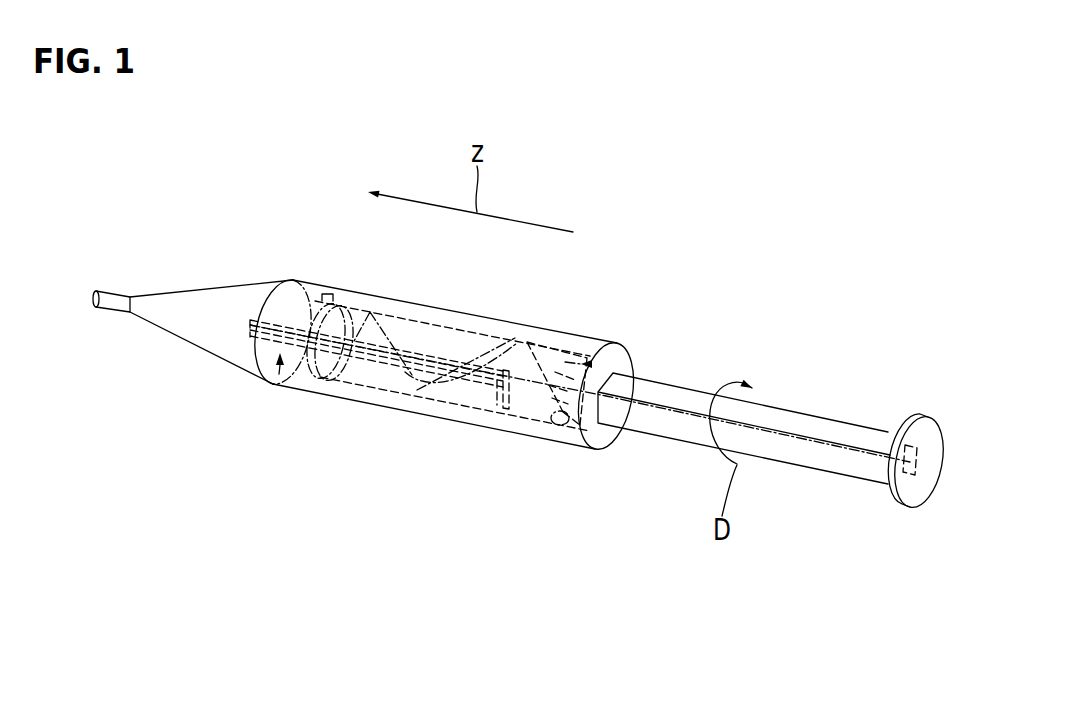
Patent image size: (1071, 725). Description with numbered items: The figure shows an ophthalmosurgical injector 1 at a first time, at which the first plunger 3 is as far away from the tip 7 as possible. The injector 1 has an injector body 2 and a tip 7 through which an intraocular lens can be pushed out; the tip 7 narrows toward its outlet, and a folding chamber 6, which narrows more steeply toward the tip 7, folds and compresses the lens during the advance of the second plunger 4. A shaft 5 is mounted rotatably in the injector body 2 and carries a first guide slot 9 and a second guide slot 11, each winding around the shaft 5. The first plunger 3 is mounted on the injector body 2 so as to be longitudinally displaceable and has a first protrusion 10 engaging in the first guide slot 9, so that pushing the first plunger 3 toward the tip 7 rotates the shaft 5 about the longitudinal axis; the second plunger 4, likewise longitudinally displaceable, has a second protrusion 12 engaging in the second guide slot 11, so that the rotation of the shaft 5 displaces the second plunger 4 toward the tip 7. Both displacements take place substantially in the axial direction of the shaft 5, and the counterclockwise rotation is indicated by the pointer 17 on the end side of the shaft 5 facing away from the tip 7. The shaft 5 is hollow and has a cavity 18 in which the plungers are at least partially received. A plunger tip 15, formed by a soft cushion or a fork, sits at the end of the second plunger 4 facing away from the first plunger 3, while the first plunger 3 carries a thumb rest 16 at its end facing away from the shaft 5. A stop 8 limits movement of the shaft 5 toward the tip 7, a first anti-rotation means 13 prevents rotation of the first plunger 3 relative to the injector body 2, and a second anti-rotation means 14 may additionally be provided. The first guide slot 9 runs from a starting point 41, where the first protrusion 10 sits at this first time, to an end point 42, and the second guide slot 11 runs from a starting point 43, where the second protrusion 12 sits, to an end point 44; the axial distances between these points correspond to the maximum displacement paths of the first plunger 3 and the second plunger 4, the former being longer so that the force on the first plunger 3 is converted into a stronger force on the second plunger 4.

The ophthalmosurgical injector 1 is at (196, 186).
The injector body 2 is at (376, 296).
The first plunger 3 is at (787, 408).
The second plunger 4 is at (449, 356).
The shaft 5 is at (426, 321).
The folding chamber 6 is at (213, 288).
The tip 7 is at (118, 293).
The stop 8 is at (325, 294).
The first guide slot 9 is at (552, 368).
The first protrusion 10 is at (560, 400).
The second guide slot 11 is at (408, 385).
The second protrusion 12 is at (497, 405).
The first anti-rotation means 13 is at (595, 443).
The second anti-rotation means 14 is at (278, 376).
The plunger tip 15 is at (256, 300).
The thumb rest 16 is at (906, 418).
The pointer 17 is at (563, 388).
The cavity 18 is at (593, 364).
The starting point of the first guide slot 41 is at (552, 420).
The end point of the first guide slot 42 is at (322, 380).
The starting point of the second guide slot 43 is at (503, 413).
The end point of the second guide slot 44 is at (338, 368).